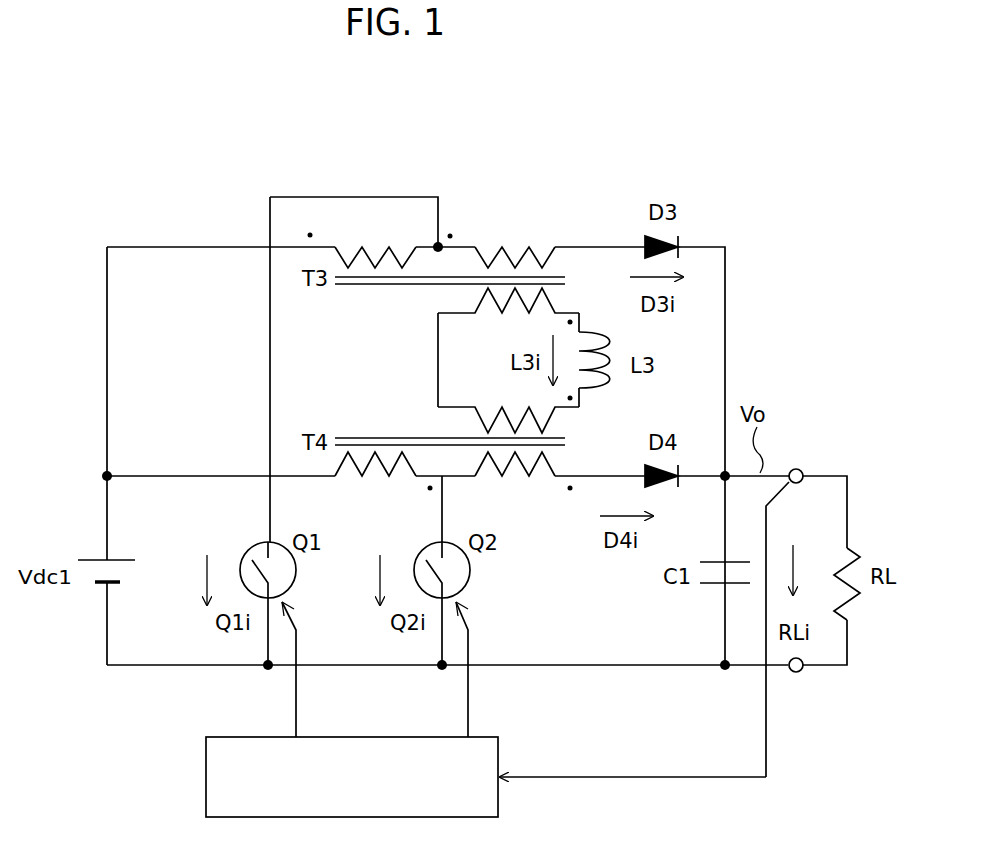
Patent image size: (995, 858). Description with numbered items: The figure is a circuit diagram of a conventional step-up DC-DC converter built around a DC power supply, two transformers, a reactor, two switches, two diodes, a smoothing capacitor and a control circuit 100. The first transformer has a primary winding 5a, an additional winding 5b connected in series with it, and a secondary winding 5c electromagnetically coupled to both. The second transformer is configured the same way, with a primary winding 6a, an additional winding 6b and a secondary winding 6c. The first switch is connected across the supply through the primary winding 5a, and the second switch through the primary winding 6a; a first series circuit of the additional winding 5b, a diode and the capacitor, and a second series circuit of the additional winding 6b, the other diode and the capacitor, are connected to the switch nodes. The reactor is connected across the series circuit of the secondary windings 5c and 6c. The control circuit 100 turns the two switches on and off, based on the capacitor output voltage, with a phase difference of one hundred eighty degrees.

The primary winding 5a is at (375, 213).
The additional winding 5b is at (514, 213).
The secondary winding 5c is at (485, 312).
The primary winding 6a is at (348, 482).
The additional winding 6b is at (547, 482).
The secondary winding 6c is at (535, 400).
The control circuit 100 is at (498, 790).